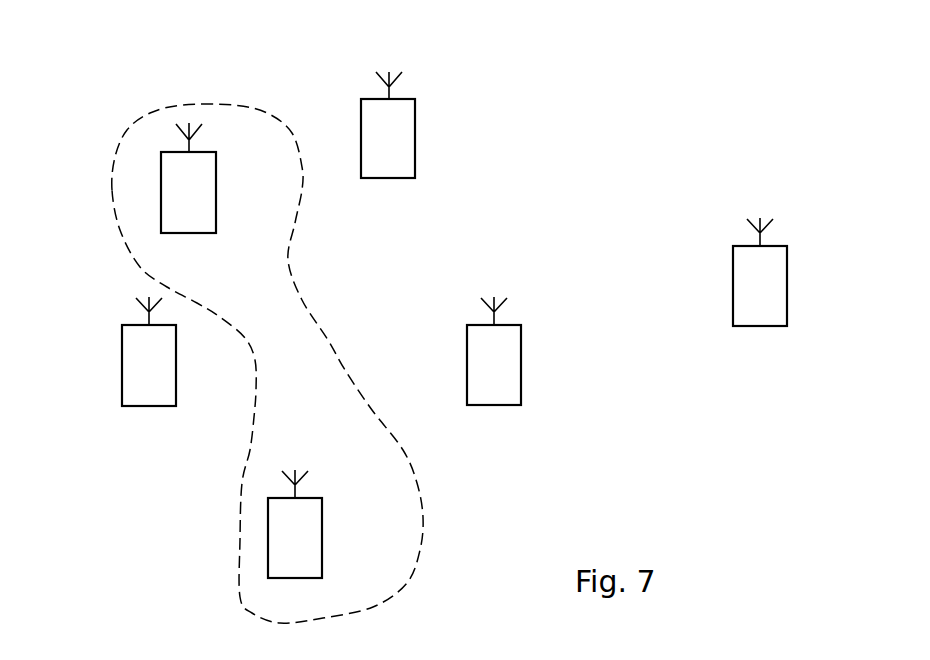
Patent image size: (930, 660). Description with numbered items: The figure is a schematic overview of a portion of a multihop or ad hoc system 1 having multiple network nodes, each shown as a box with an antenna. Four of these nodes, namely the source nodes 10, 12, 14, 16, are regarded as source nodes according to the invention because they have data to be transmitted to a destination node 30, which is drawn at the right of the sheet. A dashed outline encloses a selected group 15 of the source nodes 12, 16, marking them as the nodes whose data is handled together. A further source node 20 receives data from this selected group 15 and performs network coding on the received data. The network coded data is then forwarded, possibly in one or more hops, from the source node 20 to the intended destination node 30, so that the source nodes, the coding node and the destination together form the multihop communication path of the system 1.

The multihop or ad hoc system 1 is at (98, 83).
The source node 10 is at (416, 140).
The source node 12 is at (217, 193).
The source node 14 is at (177, 366).
The selected group of source nodes 15 is at (303, 305).
The source node 16 is at (323, 538).
The source node 20 is at (522, 366).
The destination node 30 is at (788, 286).